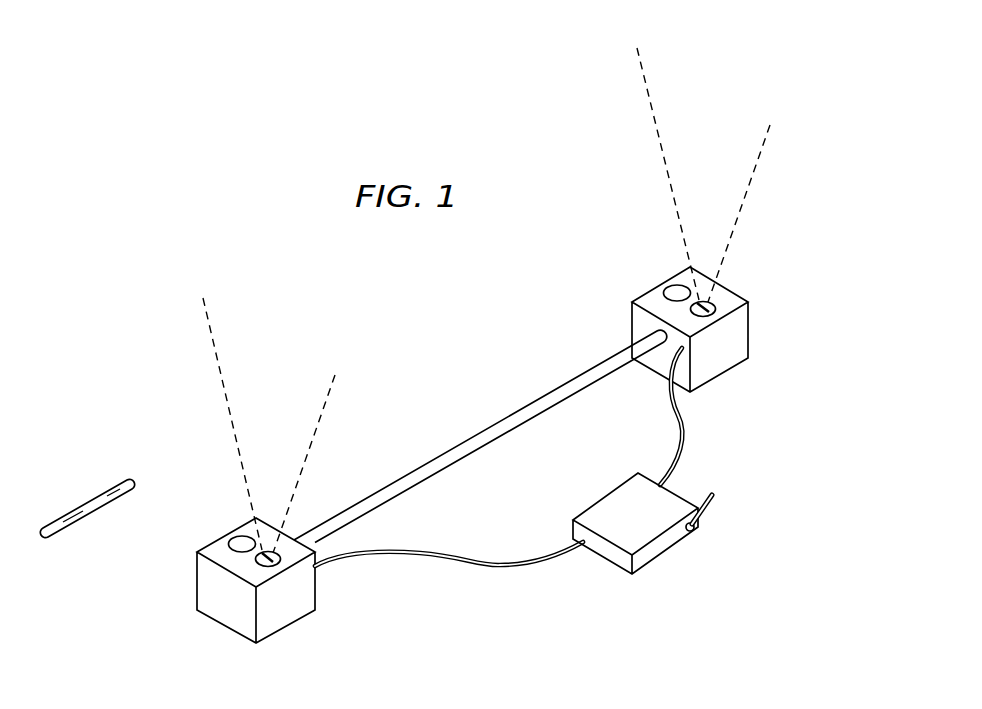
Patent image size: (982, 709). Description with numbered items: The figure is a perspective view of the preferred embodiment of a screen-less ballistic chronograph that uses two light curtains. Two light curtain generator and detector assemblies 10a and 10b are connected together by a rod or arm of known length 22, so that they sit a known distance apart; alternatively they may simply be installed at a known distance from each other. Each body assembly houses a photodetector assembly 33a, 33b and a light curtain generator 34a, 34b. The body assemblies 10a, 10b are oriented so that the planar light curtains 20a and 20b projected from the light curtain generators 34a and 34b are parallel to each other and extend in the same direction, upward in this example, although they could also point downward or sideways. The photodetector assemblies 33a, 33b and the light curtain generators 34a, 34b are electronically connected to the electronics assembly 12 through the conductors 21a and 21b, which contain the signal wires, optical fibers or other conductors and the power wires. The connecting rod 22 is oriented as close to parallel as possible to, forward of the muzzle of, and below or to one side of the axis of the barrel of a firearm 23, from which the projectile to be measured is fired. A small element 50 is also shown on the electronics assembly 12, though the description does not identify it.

The light curtain generator and detector assembly 10a is at (300, 627).
The light curtain generator and detector assembly 10b is at (746, 378).
The electronics assembly 12 is at (687, 555).
The planar light curtain 20a is at (237, 435).
The planar light curtain 20b is at (747, 193).
The conductor 21a is at (482, 560).
The conductor 21b is at (683, 419).
The rod or arm of known length 22 is at (567, 390).
The barrel of a firearm 23 is at (100, 500).
The photodetector assembly 33a is at (239, 536).
The photodetector assembly 33b is at (674, 286).
The light curtain generator 34a is at (283, 557).
The light curtain generator 34b is at (717, 305).
The switch 50 is at (712, 503).